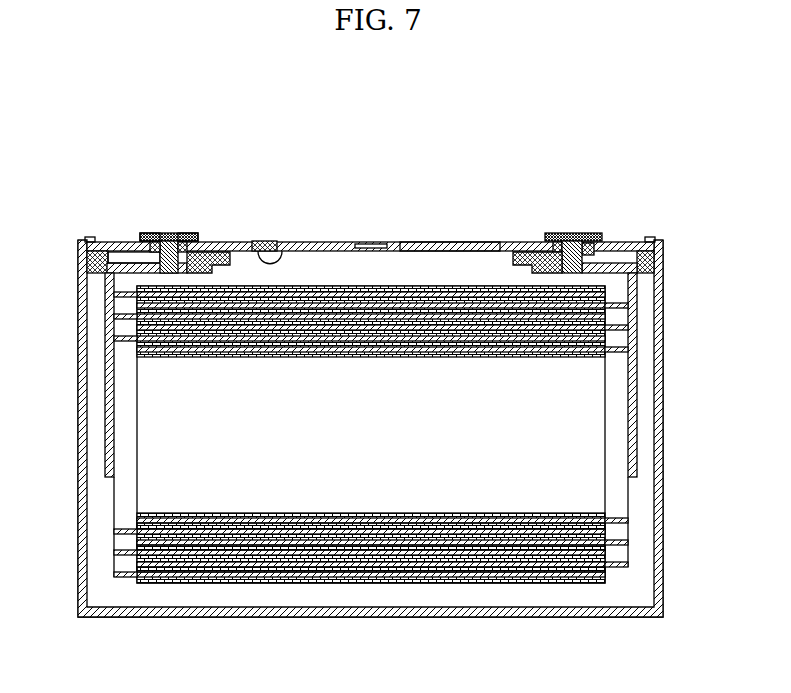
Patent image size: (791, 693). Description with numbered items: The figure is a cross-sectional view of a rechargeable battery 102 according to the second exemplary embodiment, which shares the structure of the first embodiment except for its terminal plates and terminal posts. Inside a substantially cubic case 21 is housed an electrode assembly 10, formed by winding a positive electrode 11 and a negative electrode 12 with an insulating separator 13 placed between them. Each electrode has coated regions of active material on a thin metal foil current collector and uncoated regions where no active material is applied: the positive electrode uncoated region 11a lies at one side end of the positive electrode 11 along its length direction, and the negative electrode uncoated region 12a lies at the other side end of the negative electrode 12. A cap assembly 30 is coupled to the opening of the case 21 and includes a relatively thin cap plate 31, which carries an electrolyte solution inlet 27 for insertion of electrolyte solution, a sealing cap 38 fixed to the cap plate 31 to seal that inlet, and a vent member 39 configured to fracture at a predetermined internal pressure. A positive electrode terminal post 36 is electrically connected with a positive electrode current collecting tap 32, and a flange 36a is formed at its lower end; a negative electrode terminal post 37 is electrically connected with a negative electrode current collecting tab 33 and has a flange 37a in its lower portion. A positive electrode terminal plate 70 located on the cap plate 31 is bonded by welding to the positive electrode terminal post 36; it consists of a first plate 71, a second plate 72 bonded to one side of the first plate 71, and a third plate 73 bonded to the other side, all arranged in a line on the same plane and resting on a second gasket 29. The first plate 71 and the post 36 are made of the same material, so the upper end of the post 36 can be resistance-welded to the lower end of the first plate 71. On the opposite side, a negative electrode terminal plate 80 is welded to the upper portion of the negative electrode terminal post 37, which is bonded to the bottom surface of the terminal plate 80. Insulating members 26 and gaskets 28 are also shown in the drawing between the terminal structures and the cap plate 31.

The electrode assembly 10 is at (470, 488).
The positive electrode 11 is at (222, 582).
The positive electrode uncoated region 11a is at (126, 577).
The negative electrode 12 is at (262, 582).
The negative electrode uncoated region 12a is at (614, 575).
The separator 13 is at (365, 583).
The case 21 is at (660, 376).
The insulating member 26 is at (95, 264).
The electrolyte solution inlet 27 is at (283, 243).
The gasket 28 is at (142, 239).
The second gasket 29 is at (202, 240).
The cap assembly 30 is at (223, 244).
The cap plate 31 is at (437, 243).
The positive electrode current collecting tap 32 is at (105, 406).
The negative electrode current collecting tab 33 is at (636, 418).
The positive electrode terminal post 36 is at (152, 262).
The flange 36a is at (122, 238).
The negative electrode terminal post 37 is at (560, 252).
The flange 37a is at (592, 263).
The sealing cap 38 is at (256, 241).
The vent member 39 is at (361, 244).
The positive electrode terminal plate 70 is at (127, 162).
The first plate 71 is at (165, 233).
The second plate 72 is at (148, 233).
The third plate 73 is at (188, 233).
The negative electrode terminal plate 80 is at (556, 233).
The rechargeable battery 102 is at (388, 132).